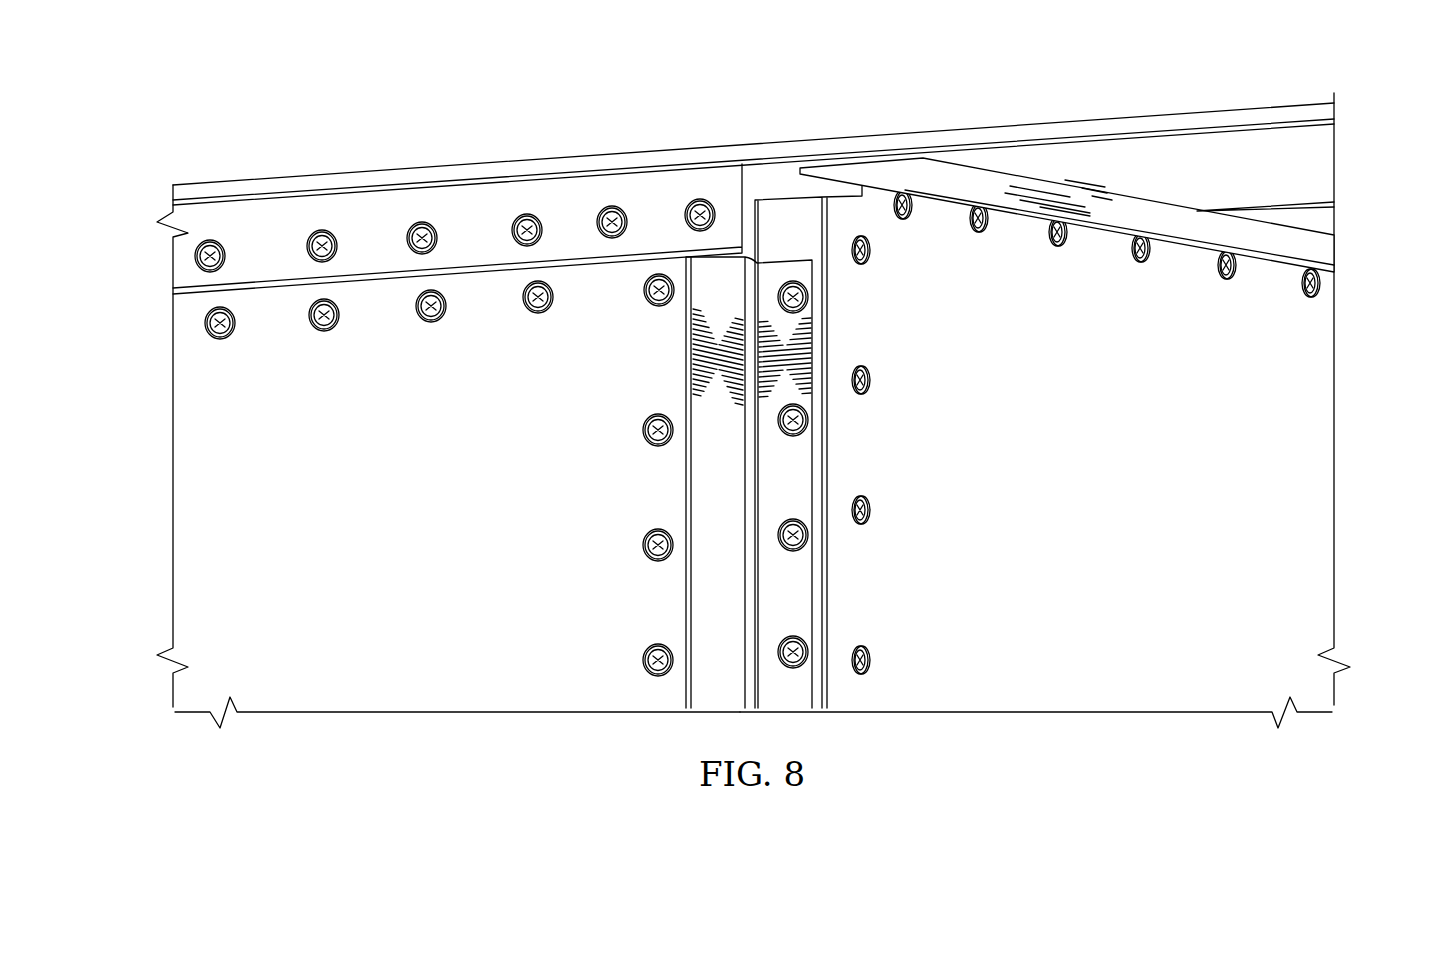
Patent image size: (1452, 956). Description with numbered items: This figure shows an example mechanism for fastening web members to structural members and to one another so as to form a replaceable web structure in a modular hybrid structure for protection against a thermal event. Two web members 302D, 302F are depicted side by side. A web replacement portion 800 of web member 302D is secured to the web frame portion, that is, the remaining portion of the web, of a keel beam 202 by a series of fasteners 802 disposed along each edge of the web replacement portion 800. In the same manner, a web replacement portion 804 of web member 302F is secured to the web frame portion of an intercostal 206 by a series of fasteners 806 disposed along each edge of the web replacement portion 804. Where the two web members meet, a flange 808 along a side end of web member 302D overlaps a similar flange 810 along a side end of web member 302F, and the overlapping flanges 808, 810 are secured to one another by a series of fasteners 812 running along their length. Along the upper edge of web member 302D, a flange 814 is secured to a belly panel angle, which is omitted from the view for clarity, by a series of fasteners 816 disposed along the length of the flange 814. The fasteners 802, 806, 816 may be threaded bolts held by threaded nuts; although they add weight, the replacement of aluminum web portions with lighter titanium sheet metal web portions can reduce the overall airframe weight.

The keel beam 202 is at (337, 186).
The intercostal 206 is at (1150, 210).
The web member 302D is at (172, 567).
The web member 302F is at (1336, 579).
The web replacement portion 800 is at (417, 688).
The fasteners 802 is at (224, 339).
The web replacement portion 804 is at (1075, 688).
The fasteners 806 is at (1048, 232).
The flange 808 is at (800, 460).
The flange 810 is at (781, 215).
The fasteners 812 is at (807, 300).
The flange 814 is at (491, 212).
The fasteners 816 is at (216, 241).